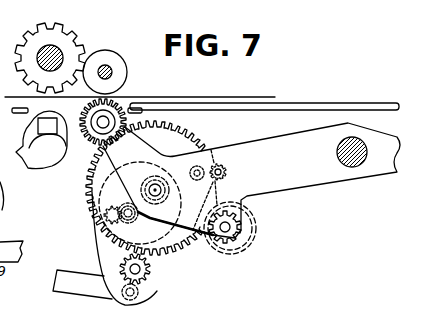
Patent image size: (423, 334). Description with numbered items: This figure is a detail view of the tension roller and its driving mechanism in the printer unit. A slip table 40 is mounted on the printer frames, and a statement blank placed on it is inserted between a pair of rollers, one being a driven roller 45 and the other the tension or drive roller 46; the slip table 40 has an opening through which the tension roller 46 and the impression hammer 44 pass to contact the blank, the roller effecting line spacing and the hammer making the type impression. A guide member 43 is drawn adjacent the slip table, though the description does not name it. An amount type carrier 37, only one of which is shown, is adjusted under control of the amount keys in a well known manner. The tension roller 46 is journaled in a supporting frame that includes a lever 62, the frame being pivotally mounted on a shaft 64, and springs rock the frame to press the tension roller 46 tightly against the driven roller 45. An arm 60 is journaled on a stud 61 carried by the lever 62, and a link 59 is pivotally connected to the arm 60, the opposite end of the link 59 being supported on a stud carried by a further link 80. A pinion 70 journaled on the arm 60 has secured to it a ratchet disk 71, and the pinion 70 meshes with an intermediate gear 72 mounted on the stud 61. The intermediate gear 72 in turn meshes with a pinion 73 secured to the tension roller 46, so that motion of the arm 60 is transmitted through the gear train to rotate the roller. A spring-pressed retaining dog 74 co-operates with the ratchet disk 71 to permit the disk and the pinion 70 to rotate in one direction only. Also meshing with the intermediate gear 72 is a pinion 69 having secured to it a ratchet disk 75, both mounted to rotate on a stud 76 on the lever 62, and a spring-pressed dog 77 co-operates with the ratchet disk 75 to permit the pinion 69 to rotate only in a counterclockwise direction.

The amount type carrier 37 is at (74, 44).
The driven roller 45 is at (118, 70).
The guide rail 43 is at (20, 97).
The tension or drive roller 46 is at (120, 98).
The slip table 40 is at (250, 103).
The pinion 73 is at (90, 111).
The impression hammer 44 is at (30, 131).
The intermediate gear 72 is at (93, 162).
The arm 60 is at (96, 245).
The lever 62 is at (277, 140).
The stud 61 is at (148, 183).
The spring-pressed retaining dog 74 is at (121, 208).
The shaft 64 is at (338, 152).
The spring-pressed dog 77 is at (227, 172).
The stud 76 is at (236, 227).
The pinion 69 is at (244, 241).
The ratchet disk 75 is at (238, 257).
The link 59 is at (90, 278).
The ratchet disk 71 is at (166, 272).
The pinion 70 is at (156, 294).
The link 80 is at (11, 241).